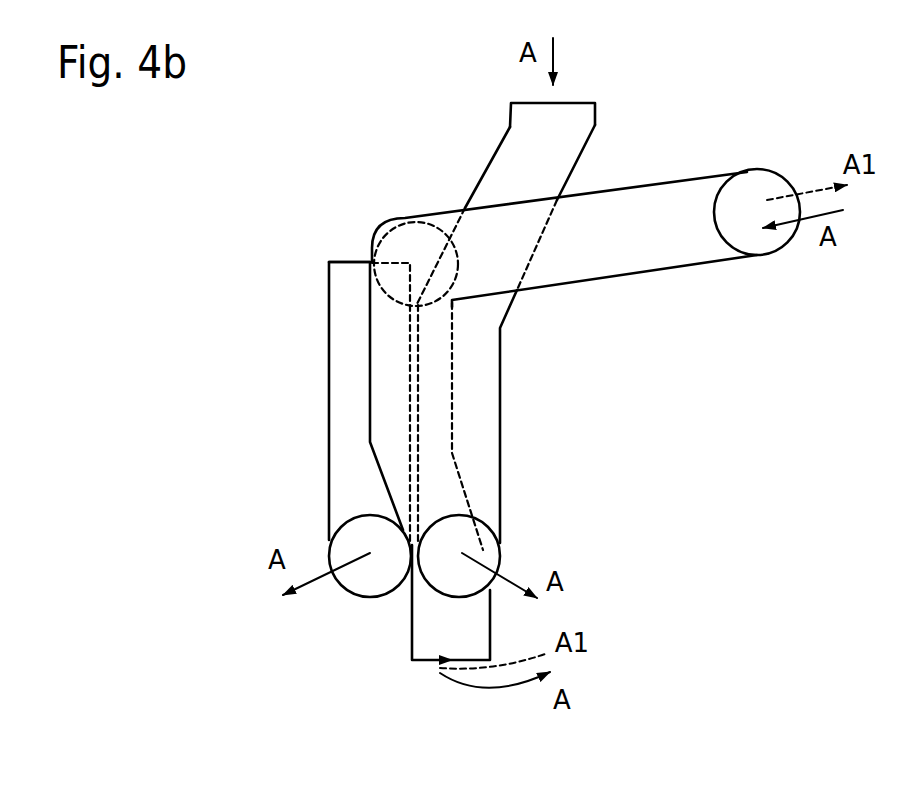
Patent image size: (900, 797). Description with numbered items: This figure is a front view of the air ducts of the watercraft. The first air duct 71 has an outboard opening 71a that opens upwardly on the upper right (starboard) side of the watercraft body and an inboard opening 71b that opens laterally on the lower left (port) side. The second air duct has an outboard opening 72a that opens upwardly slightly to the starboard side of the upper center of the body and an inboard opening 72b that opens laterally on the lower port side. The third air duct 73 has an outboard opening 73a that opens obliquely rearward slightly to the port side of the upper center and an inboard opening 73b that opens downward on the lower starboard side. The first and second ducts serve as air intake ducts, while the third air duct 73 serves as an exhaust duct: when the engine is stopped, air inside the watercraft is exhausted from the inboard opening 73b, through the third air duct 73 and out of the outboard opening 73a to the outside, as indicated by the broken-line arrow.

The first air duct 71 is at (338, 393).
The outboard opening of the first air duct 71a is at (340, 260).
The inboard opening of the first air duct 71b is at (357, 578).
The outboard opening of the second air duct 72a is at (580, 102).
The inboard opening of the second air duct 72b is at (493, 548).
The third air duct 73 is at (668, 192).
The outboard opening of the third air duct 73a is at (775, 170).
The inboard opening of the third air duct 73b is at (418, 660).